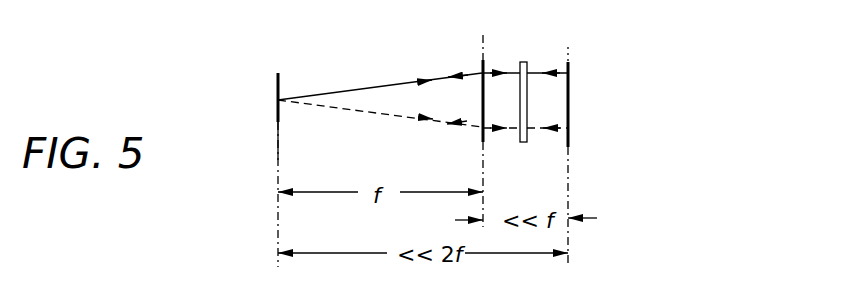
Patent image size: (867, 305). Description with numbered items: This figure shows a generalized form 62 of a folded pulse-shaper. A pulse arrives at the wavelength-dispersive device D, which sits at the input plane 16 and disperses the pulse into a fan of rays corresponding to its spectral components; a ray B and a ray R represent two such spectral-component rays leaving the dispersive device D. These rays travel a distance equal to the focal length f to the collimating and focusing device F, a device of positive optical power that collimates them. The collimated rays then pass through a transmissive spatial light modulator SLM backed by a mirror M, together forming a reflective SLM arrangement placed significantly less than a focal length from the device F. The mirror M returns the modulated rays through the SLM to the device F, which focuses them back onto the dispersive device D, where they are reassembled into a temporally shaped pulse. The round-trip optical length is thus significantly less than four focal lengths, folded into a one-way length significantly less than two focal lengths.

The generalized form of pulse-shaper 62 is at (205, 210).
The input plane 16 is at (278, 129).
The wavelength-dispersive device D is at (277, 78).
The light beam B is at (389, 116).
The reference ray R is at (404, 80).
The collimating and focusing device F is at (483, 63).
The spatial light modulator SLM is at (528, 90).
The mirror M is at (568, 63).